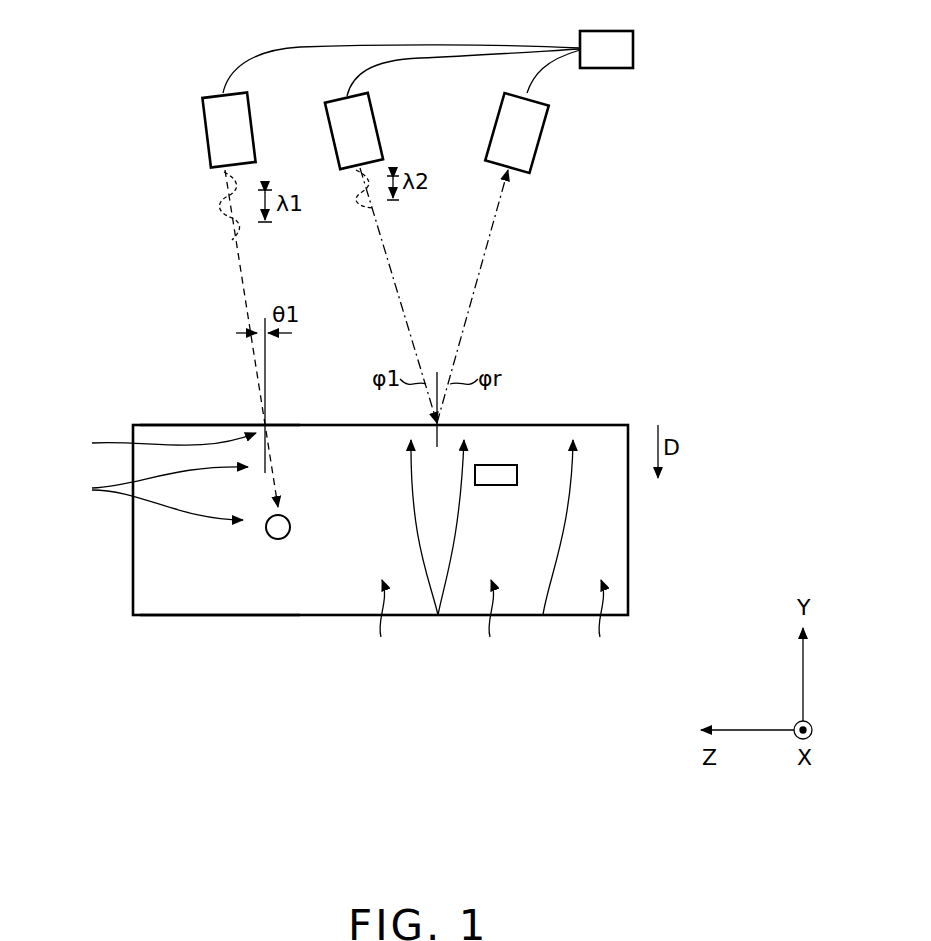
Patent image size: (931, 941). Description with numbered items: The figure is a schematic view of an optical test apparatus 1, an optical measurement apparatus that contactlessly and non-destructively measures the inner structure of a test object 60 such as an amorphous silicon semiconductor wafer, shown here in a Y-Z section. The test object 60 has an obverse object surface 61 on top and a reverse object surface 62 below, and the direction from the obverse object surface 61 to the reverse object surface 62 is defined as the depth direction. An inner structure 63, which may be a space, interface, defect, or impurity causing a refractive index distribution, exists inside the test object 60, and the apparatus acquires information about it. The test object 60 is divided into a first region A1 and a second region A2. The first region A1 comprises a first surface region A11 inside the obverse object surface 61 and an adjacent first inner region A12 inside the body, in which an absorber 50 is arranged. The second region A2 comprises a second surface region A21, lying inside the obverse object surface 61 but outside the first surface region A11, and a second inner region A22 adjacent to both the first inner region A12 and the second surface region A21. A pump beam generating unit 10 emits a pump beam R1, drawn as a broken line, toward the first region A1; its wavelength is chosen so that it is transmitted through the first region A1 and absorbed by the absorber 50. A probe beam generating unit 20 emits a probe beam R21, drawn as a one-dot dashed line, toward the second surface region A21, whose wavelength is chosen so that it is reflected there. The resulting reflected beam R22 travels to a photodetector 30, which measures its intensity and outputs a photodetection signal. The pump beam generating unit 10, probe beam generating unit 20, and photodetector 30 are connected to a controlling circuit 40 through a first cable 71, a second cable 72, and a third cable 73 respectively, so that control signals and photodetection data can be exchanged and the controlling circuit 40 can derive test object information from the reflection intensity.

The optical test apparatus 1 is at (754, 58).
The pump beam generating unit 10 is at (257, 124).
The probe beam generating unit 20 is at (376, 124).
The photodetector 30 is at (541, 147).
The controlling circuit 40 is at (633, 50).
The absorber 50 is at (278, 539).
The test object 60 is at (133, 578).
The obverse object surface 61 is at (180, 424).
The reverse object surface 62 is at (185, 617).
The inner structure 63 is at (507, 464).
The first cable 71 is at (398, 46).
The second cable 72 is at (398, 58).
The third cable 73 is at (540, 68).
The pump beam R1 is at (250, 300).
The probe beam R21 is at (387, 256).
The reflected beam R22 is at (492, 266).
The first region A1 is at (50, 427).
The first surface region A11 is at (154, 444).
The first inner region A12 is at (150, 493).
The second region A2 is at (627, 667).
The second surface region A21 is at (543, 615).
The second inner region A22 is at (495, 624).